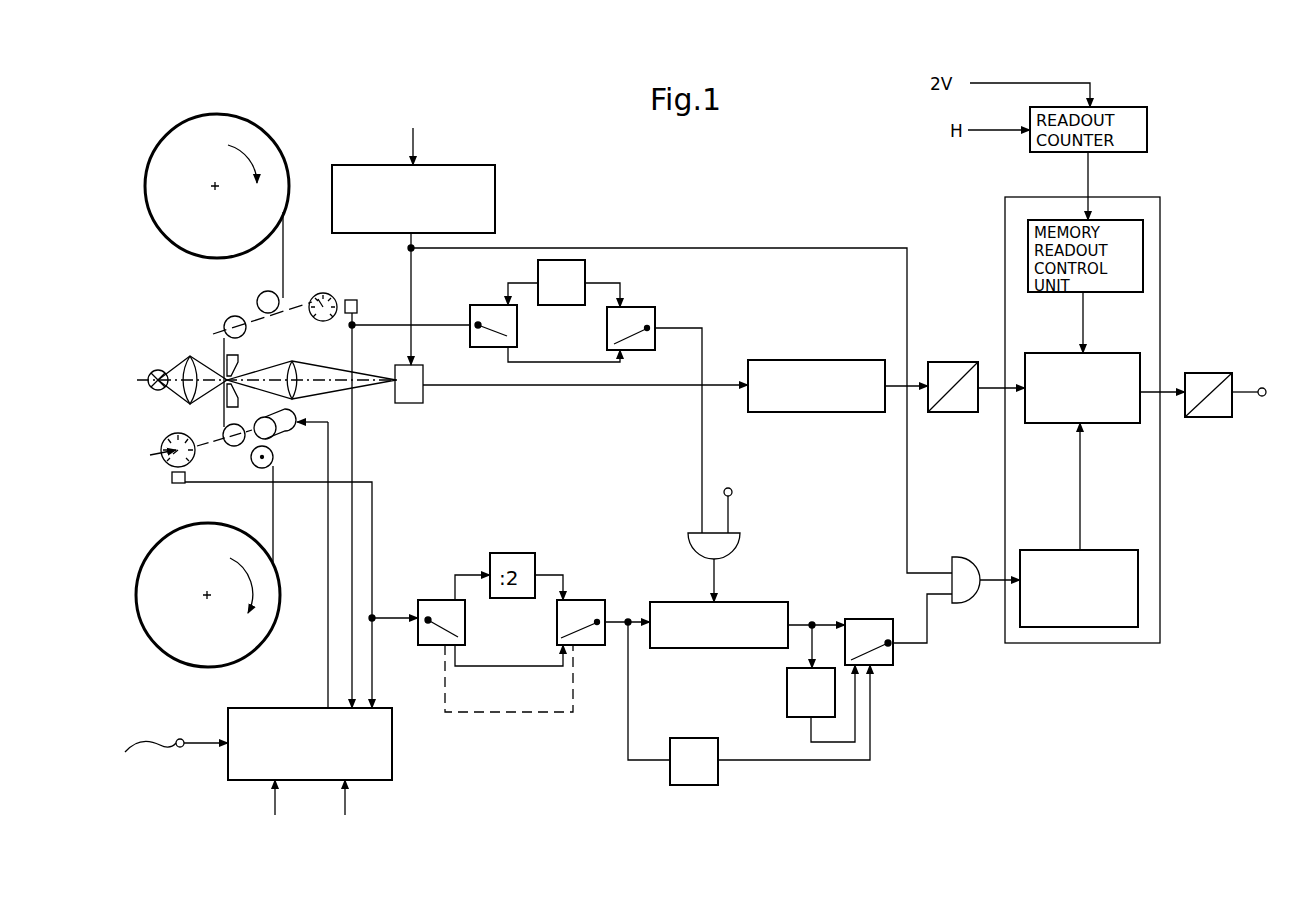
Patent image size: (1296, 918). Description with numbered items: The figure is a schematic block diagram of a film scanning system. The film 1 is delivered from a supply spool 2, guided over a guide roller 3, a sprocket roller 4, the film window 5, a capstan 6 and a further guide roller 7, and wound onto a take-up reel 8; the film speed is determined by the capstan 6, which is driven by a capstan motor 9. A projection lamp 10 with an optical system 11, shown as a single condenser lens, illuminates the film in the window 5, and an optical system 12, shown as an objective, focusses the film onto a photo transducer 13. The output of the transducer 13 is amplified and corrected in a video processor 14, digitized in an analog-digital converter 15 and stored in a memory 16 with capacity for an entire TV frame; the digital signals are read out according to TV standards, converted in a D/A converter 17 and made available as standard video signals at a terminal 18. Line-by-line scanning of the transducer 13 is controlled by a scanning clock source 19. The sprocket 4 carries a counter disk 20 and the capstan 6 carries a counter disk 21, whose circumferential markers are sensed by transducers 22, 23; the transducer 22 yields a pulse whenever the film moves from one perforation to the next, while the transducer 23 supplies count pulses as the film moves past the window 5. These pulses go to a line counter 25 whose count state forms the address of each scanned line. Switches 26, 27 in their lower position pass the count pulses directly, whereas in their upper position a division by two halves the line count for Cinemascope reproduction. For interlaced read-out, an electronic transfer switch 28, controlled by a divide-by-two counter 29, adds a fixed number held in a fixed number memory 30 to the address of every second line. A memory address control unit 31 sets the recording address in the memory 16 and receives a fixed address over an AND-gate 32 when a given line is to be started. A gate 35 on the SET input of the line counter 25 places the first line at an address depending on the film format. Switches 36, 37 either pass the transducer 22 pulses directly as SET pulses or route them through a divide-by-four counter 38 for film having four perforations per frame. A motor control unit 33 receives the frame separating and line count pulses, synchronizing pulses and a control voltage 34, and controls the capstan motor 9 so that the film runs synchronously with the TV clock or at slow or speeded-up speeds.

The film 1 is at (283, 262).
The supply spool 2 is at (234, 236).
The guide roller 3 is at (265, 291).
The sprocket roller 4 is at (235, 316).
The film window 5 is at (247, 357).
The capstan 6 is at (238, 424).
The further guide roller 7 is at (273, 457).
The take-up reel 8 is at (229, 591).
The capstan motor 9 is at (287, 434).
The projection lamp 10 is at (172, 360).
The optical system 11 is at (192, 365).
The optical system 12 is at (305, 345).
The photo transducer 13 is at (423, 372).
The video processor 14 is at (868, 368).
The analog-digital converter 15 is at (962, 368).
The memory 16 is at (1124, 360).
The D/A converter 17 is at (1218, 378).
The terminal 18 is at (1261, 380).
The scanning clock source 19 is at (468, 176).
The counter disk 20 is at (343, 290).
The counter disk 21 is at (170, 435).
The transducer 22 is at (357, 305).
The transducer 23 is at (185, 485).
The line counter 25 is at (772, 610).
The switch 26 is at (432, 608).
The switch 27 is at (594, 608).
The electronic transfer switch 28 is at (869, 627).
The divide-by-two counter 29 is at (694, 746).
The fixed number memory 30 is at (787, 682).
The memory address control unit 31 is at (1115, 558).
The AND-gate 32 is at (965, 565).
The motor control unit 33 is at (293, 716).
The control voltage 34 is at (180, 739).
The gate 35 is at (735, 545).
The switch 36 is at (484, 314).
The switch 37 is at (643, 315).
The divide-by-four counter 38 is at (580, 268).